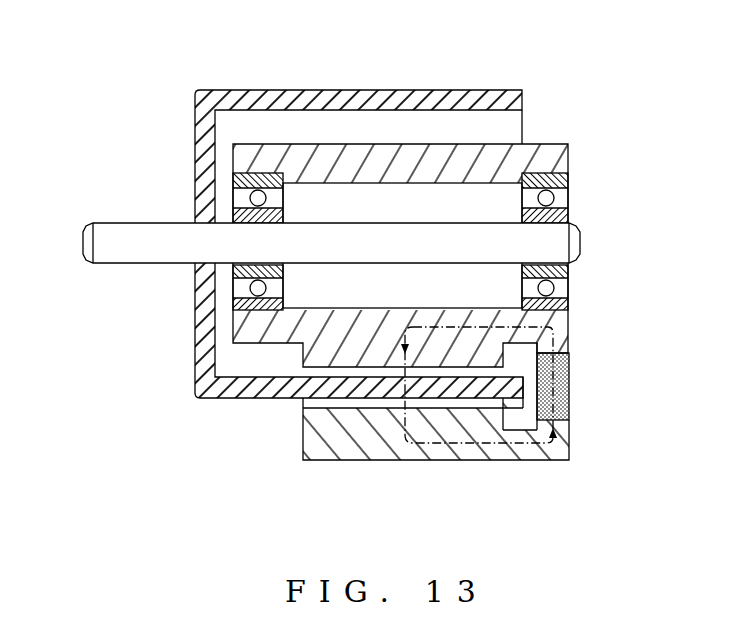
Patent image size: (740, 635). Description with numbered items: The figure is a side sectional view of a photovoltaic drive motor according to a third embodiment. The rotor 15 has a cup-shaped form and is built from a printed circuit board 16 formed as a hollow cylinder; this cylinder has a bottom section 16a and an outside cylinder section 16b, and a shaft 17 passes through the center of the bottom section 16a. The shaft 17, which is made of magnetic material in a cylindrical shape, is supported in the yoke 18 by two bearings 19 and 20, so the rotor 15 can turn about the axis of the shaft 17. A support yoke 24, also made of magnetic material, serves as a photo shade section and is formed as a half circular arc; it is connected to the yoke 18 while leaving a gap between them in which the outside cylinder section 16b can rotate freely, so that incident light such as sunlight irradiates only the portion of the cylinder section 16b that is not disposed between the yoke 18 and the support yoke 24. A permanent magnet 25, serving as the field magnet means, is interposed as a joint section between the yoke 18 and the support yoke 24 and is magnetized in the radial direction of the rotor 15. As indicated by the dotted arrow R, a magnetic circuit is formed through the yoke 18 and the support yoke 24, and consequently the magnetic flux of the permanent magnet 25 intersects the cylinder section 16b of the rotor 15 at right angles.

The rotor 15 is at (345, 270).
The printed circuit board 16 is at (317, 206).
The bottom section 16a is at (195, 152).
The outside cylinder section 16b is at (396, 90).
The shaft 17 is at (112, 230).
The yoke 18 is at (540, 143).
The bearing 19 is at (230, 297).
The bearing 20 is at (569, 280).
The support yoke 24 is at (450, 460).
The permanent magnet 25 is at (570, 392).
The dotted arrow R is at (537, 460).